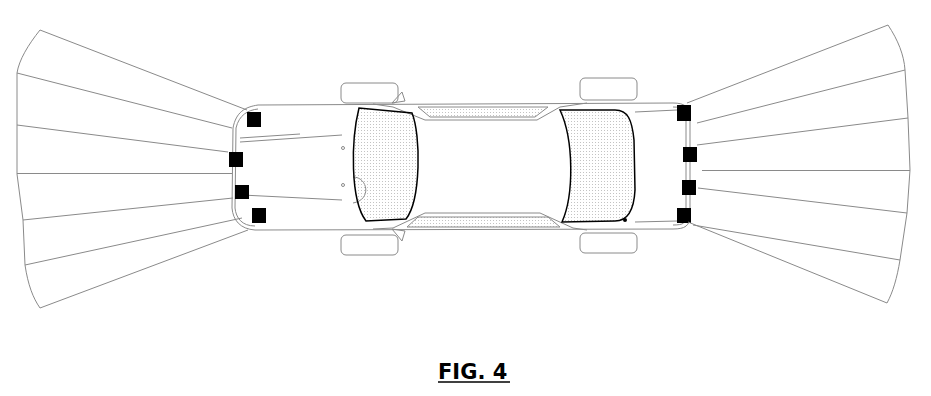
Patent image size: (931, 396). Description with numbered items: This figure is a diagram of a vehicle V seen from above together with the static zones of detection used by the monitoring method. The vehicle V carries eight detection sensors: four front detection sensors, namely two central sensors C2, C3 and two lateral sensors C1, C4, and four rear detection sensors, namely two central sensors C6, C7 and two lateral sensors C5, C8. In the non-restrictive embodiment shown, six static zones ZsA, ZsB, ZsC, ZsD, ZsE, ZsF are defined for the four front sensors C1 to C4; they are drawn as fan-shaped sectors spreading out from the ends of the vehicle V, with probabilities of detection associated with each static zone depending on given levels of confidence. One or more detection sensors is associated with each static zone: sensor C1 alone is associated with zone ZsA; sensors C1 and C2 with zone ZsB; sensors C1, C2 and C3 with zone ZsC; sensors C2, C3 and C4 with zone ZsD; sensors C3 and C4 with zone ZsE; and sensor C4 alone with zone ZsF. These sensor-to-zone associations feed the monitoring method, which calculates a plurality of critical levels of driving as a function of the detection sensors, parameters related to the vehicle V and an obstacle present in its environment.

The vehicle V is at (485, 67).
The lateral front detection sensor C1 is at (266, 217).
The central front detection sensor C2 is at (241, 199).
The central front detection sensor C3 is at (243, 158).
The lateral front detection sensor C4 is at (254, 112).
The lateral rear detection sensor C5 is at (683, 225).
The central rear detection sensor C6 is at (696, 188).
The central rear detection sensor C7 is at (697, 148).
The lateral rear detection sensor C8 is at (683, 105).
The static zone of detection ZsA is at (462, 265).
The static zone of detection ZsB is at (465, 239).
The static zone of detection ZsC is at (463, 195).
The static zone of detection ZsD is at (463, 146).
The static zone of detection ZsE is at (463, 111).
The static zone of detection ZsF is at (461, 76).